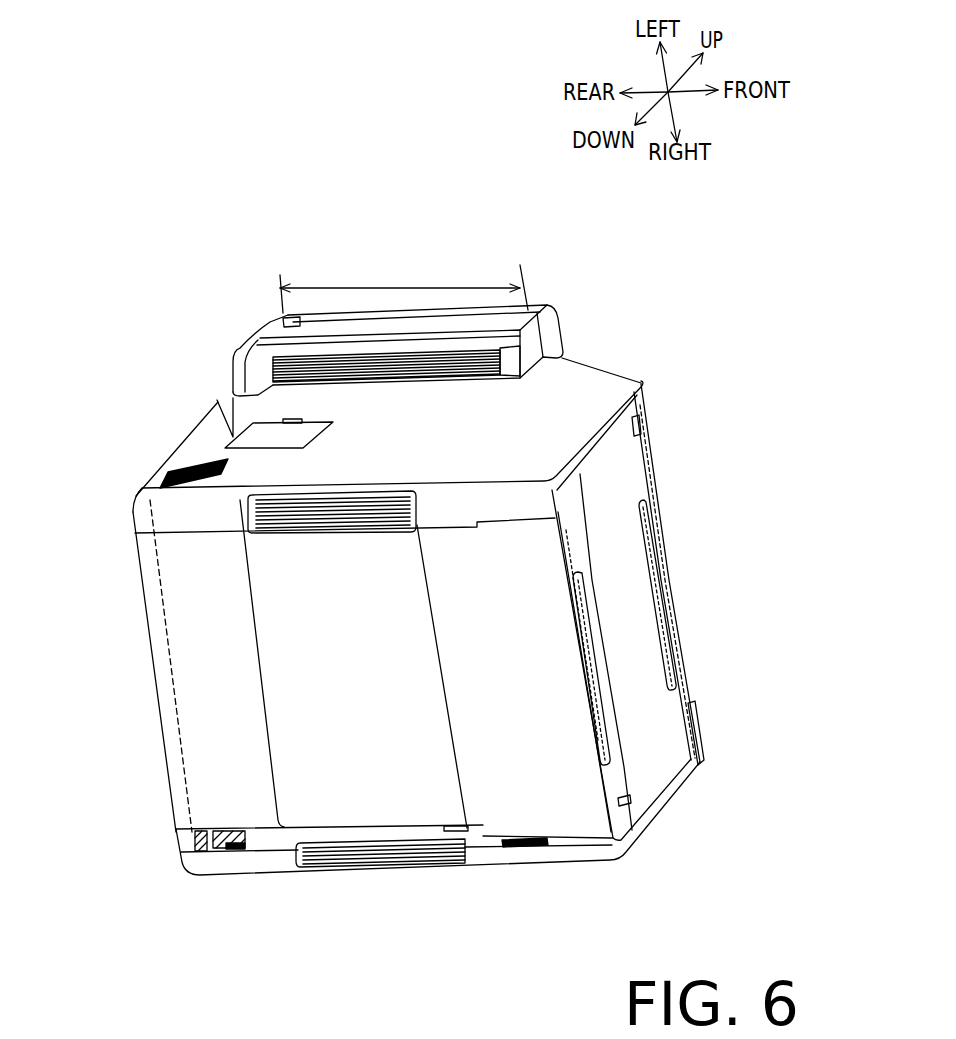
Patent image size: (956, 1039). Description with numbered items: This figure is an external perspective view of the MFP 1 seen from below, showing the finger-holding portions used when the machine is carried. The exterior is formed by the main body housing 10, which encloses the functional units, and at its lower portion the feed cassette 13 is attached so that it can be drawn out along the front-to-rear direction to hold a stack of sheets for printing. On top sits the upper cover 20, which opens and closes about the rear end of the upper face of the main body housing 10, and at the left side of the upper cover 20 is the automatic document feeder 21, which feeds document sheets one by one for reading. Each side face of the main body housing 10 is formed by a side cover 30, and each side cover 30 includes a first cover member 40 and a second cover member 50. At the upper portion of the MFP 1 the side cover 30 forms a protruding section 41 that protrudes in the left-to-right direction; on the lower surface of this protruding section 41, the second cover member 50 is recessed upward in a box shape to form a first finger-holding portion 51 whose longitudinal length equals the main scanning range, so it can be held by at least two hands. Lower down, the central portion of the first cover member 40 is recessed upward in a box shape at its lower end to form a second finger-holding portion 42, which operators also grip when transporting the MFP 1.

The MFP 1 is at (625, 248).
The main body housing 10 is at (653, 782).
The feed cassette 13 is at (573, 533).
The upper cover 20 is at (562, 333).
The automatic document feeder 21 is at (547, 318).
The side cover 30 is at (105, 380).
The first cover member 40 is at (223, 435).
The protruding section 41 is at (232, 353).
The second finger-holding portion 42 is at (297, 512).
The second cover member 50 is at (248, 376).
The first finger-holding portion 51 is at (338, 367).